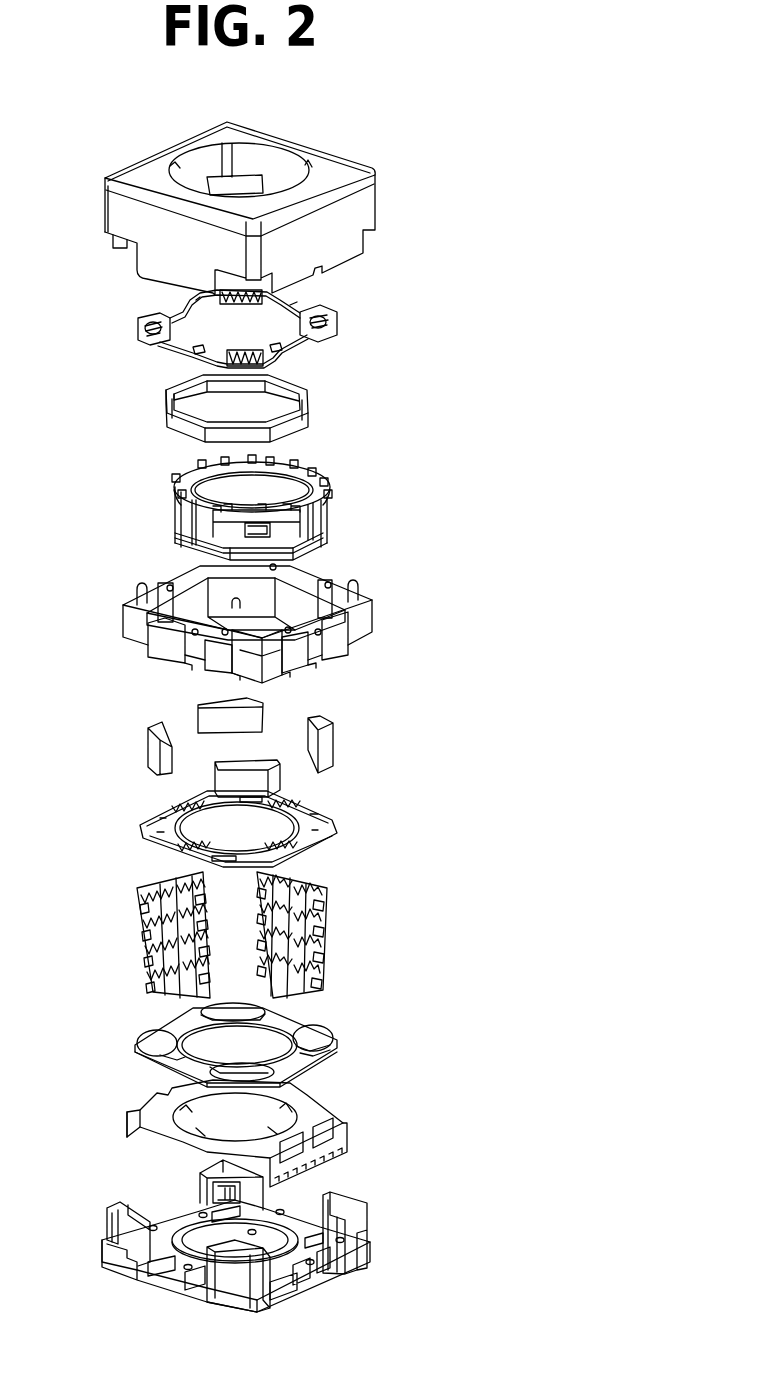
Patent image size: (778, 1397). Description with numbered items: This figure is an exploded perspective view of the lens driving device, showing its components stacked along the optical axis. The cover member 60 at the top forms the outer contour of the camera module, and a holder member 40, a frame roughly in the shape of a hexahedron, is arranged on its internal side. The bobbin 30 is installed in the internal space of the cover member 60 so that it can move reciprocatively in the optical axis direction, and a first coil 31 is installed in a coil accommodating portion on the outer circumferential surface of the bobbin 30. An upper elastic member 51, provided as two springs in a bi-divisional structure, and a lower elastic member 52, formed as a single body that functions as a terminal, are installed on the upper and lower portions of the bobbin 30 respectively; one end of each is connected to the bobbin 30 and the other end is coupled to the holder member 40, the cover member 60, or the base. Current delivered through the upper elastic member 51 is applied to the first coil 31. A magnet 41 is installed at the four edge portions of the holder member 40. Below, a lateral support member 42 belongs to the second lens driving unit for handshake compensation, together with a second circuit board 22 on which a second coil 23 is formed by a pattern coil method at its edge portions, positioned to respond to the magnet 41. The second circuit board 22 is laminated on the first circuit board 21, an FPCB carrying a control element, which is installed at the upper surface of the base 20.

The cover member 60 is at (365, 210).
The upper elastic member 51 is at (138, 335).
The first coil 31 is at (167, 413).
The bobbin 30 is at (177, 527).
The holder member 40 is at (133, 623).
The magnet 41 is at (148, 742).
The lower elastic member 52 is at (330, 822).
The lateral support member 42 is at (327, 931).
The second circuit board 22 is at (226, 1038).
The second coil 23 is at (313, 1040).
The first circuit board 21 is at (127, 1121).
The base 20 is at (367, 1222).